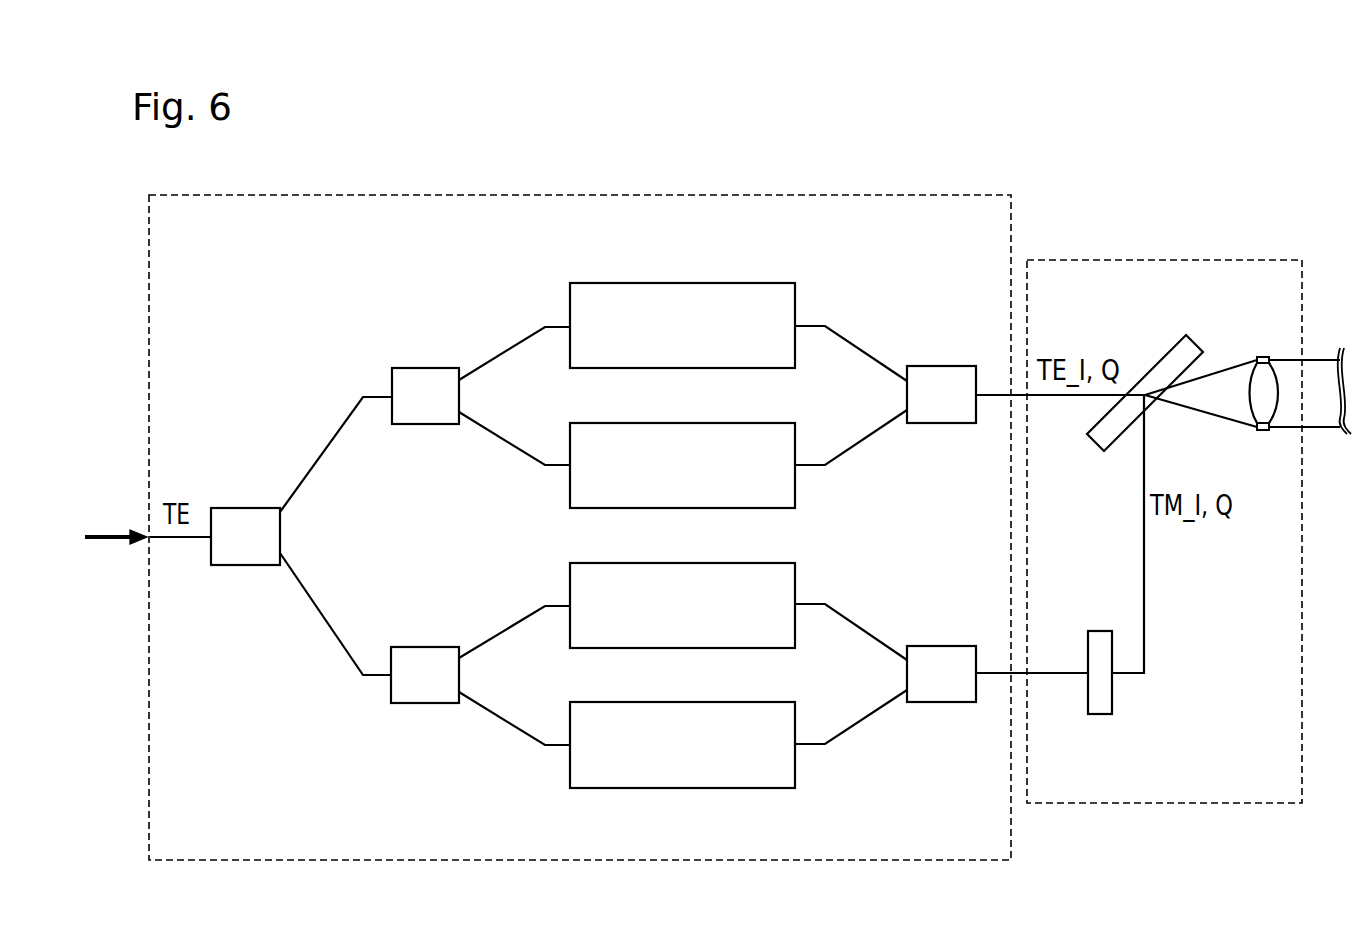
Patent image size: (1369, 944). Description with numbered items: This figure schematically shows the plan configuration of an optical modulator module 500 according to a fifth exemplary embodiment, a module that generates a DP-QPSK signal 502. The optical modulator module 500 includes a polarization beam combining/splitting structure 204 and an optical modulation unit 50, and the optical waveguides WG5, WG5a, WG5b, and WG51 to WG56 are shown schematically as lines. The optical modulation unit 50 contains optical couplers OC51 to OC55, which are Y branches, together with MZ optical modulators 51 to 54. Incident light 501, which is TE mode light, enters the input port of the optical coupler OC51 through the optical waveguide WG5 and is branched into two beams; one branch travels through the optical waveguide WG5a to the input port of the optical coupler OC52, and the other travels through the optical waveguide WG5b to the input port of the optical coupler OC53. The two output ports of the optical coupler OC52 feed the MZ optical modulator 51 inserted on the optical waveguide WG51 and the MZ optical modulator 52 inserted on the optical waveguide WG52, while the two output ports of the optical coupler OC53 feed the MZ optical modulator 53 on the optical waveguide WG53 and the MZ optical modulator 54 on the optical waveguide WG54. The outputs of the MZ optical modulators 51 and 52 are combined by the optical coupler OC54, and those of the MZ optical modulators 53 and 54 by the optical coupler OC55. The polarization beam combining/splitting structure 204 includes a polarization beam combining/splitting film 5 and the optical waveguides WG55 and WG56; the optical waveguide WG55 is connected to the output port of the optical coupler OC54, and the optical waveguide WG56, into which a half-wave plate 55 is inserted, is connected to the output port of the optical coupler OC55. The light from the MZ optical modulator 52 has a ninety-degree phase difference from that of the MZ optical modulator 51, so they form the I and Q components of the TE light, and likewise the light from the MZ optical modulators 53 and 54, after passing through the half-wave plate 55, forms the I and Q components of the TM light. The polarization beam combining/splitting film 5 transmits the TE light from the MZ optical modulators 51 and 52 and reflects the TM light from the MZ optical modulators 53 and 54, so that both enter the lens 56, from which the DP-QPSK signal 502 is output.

The optical modulator module 500 is at (813, 94).
The optical modulation unit 50 is at (446, 195).
The polarization beam combining/splitting structure 204 is at (1185, 258).
The incident light 501 is at (110, 530).
The DP-QPSK signal 502 is at (1325, 352).
The MZ optical modulator 51 is at (738, 282).
The MZ optical modulator 52 is at (797, 493).
The MZ optical modulator 53 is at (797, 572).
The MZ optical modulator 54 is at (738, 790).
The polarization beam combining/splitting film 5 is at (1158, 357).
The half-wave plate 55 is at (1093, 628).
The lens 56 is at (1264, 355).
The optical coupler OC51 is at (246, 506).
The optical coupler OC52 is at (426, 366).
The optical coupler OC53 is at (426, 645).
The optical coupler OC54 is at (942, 364).
The optical coupler OC55 is at (944, 644).
The optical waveguide WG5 is at (190, 543).
The optical waveguide WG5a is at (328, 445).
The optical waveguide WG5b is at (327, 620).
The optical waveguide WG51 is at (520, 340).
The optical waveguide WG52 is at (522, 455).
The optical waveguide WG53 is at (520, 620).
The optical waveguide WG54 is at (522, 735).
The optical waveguide WG55 is at (1065, 400).
The optical waveguide WG56 is at (1060, 678).